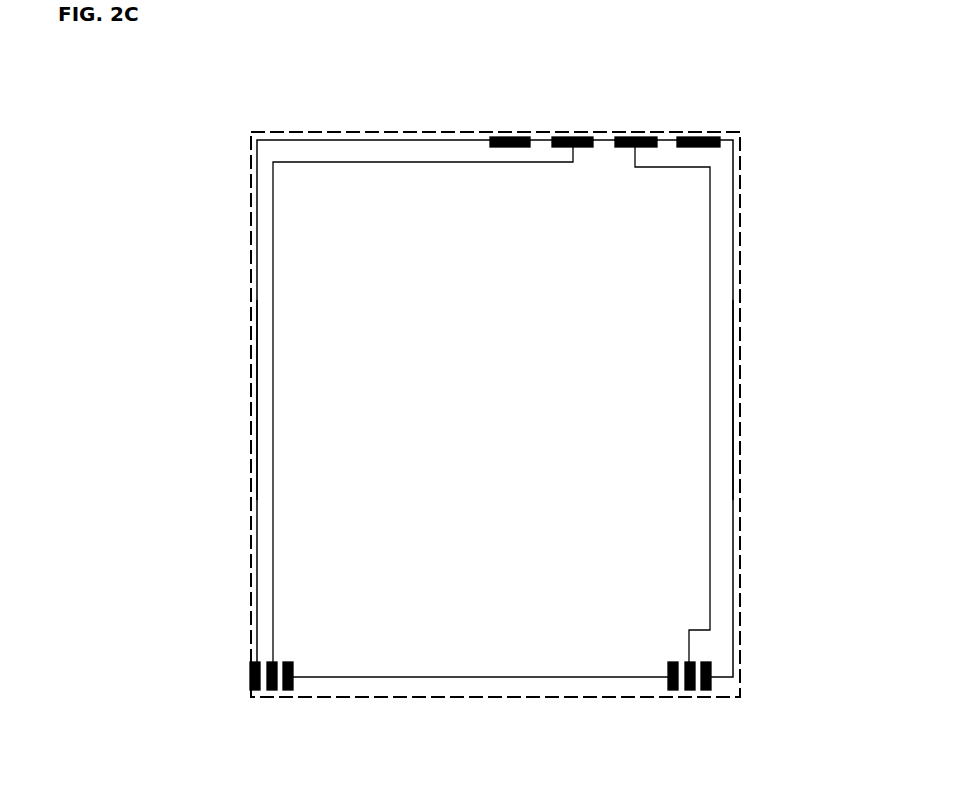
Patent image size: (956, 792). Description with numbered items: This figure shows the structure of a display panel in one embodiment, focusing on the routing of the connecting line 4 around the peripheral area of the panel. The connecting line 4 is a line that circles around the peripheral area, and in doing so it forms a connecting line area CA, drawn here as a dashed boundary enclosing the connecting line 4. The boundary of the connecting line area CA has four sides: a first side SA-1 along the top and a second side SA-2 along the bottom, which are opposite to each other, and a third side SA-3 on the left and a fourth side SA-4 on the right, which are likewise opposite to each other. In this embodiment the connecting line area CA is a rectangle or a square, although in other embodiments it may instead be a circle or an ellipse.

The connecting line 4 is at (480, 416).
The connecting line area CA is at (252, 562).
The first side SA-1 is at (587, 110).
The second side SA-2 is at (480, 710).
The third side SA-3 is at (208, 400).
The fourth side SA-4 is at (774, 400).